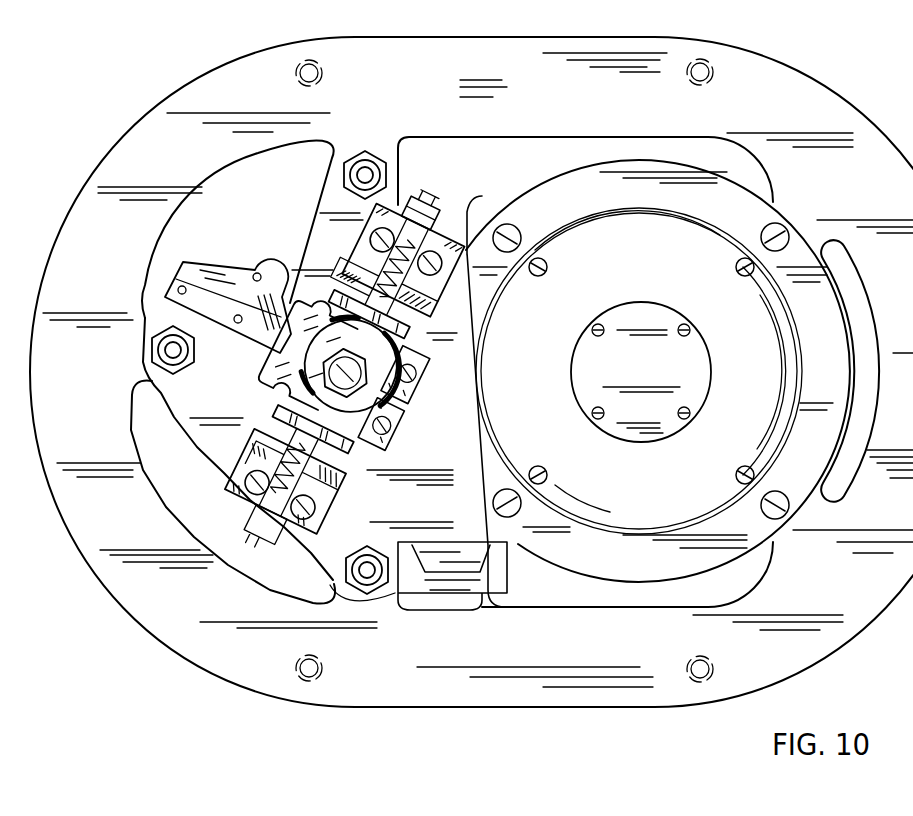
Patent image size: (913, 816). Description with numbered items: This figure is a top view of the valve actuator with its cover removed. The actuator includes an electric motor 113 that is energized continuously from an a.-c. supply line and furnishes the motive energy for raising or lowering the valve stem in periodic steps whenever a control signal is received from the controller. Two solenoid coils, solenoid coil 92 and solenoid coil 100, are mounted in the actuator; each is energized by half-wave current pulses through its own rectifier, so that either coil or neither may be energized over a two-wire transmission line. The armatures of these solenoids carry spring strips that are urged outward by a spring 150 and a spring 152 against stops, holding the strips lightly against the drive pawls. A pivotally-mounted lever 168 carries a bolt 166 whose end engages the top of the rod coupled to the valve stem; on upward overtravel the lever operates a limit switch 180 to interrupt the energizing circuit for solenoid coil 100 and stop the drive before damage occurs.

The solenoid coil 92 is at (349, 261).
The solenoid coil 100 is at (277, 445).
The electric motor 113 is at (656, 372).
The spring 150 is at (434, 229).
The spring 152 is at (297, 477).
The bolt 166 is at (390, 390).
The lever 168 is at (266, 392).
The limit switch 180 is at (228, 318).